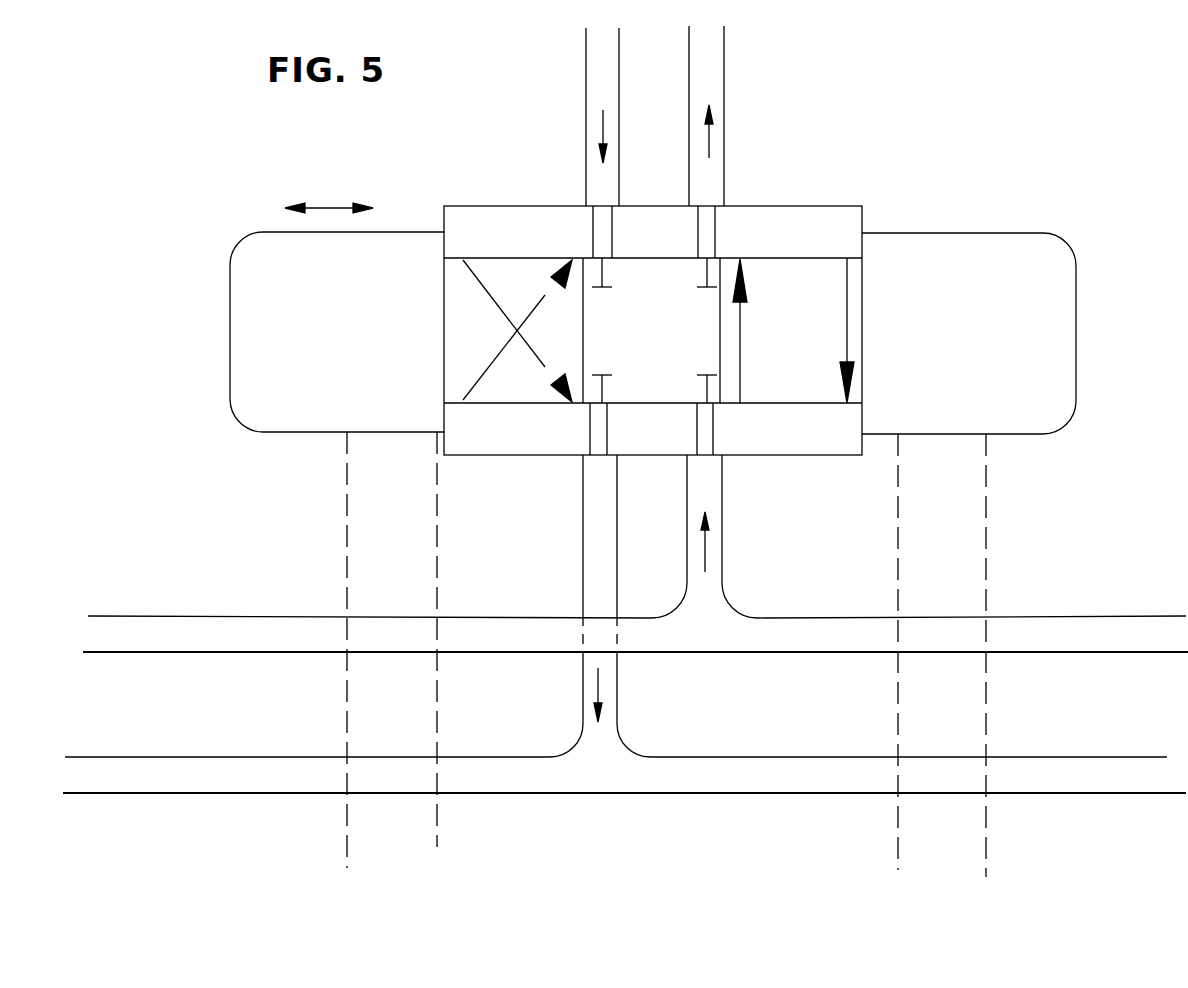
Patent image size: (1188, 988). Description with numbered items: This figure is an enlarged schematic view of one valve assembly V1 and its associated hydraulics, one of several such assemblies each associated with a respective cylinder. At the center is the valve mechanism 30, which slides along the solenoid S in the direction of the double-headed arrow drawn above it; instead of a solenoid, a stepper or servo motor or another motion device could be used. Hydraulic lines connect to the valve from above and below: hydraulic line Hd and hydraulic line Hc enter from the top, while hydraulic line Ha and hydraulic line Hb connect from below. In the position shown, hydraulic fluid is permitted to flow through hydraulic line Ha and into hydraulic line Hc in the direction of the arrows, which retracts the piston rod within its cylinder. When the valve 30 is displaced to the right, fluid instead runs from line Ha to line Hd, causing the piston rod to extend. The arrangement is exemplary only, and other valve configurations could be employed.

The valve assembly V1 is at (479, 198).
The valve mechanism 30 is at (783, 207).
The solenoid S is at (270, 432).
The hydraulic line Hd is at (586, 88).
The hydraulic line Hc is at (724, 97).
The hydraulic line Ha is at (722, 513).
The hydraulic line Hb is at (616, 695).